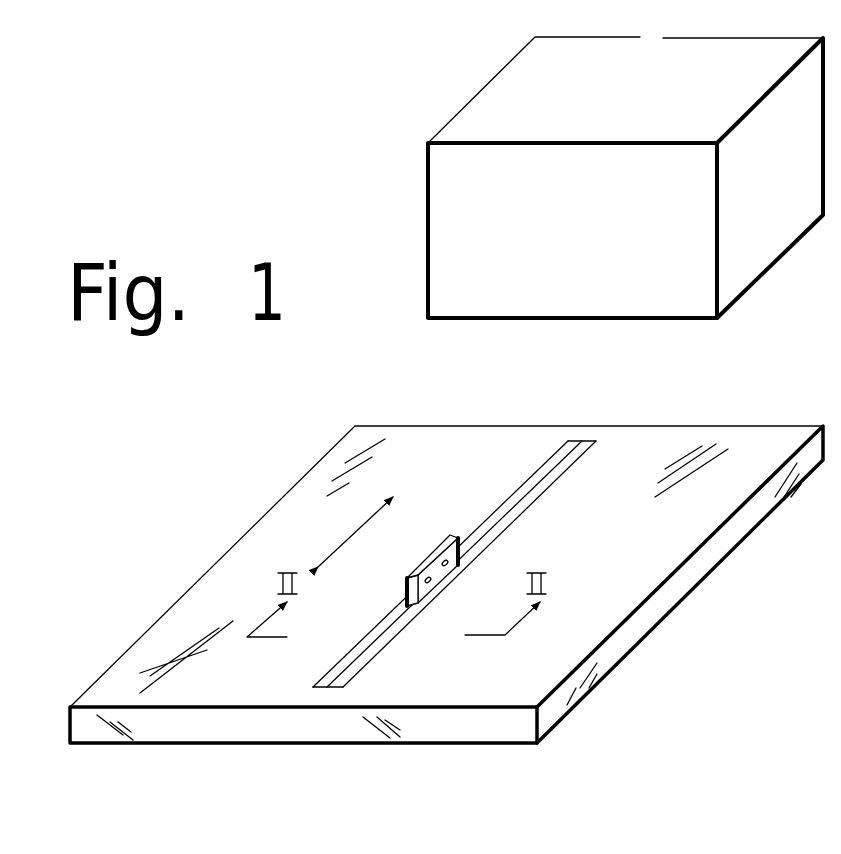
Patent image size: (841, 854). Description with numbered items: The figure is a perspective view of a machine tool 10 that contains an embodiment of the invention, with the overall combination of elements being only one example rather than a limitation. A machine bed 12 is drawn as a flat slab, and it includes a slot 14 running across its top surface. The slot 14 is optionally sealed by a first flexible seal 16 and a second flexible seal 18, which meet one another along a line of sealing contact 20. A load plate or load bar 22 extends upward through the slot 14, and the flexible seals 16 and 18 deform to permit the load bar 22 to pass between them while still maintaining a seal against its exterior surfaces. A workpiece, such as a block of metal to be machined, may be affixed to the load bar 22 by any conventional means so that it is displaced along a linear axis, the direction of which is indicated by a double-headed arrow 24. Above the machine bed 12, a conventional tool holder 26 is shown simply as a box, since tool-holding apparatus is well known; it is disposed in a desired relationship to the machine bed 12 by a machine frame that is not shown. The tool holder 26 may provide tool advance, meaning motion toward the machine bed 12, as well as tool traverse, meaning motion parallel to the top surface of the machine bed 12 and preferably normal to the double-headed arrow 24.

The machine tool 10 is at (248, 182).
The machine bed 12 is at (623, 602).
The slot 14 is at (476, 560).
The first flexible seal 16 is at (562, 464).
The second flexible seal 18 is at (560, 455).
The line of sealing contact 20 is at (515, 500).
The load bar 22 is at (440, 567).
The double-headed arrow 24 is at (358, 530).
The tool holder 26 is at (458, 303).